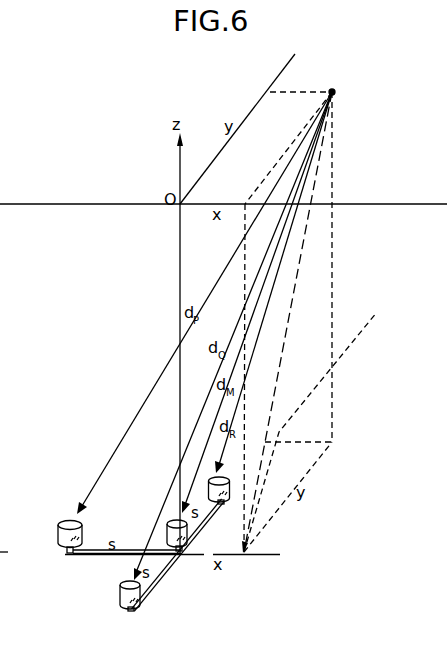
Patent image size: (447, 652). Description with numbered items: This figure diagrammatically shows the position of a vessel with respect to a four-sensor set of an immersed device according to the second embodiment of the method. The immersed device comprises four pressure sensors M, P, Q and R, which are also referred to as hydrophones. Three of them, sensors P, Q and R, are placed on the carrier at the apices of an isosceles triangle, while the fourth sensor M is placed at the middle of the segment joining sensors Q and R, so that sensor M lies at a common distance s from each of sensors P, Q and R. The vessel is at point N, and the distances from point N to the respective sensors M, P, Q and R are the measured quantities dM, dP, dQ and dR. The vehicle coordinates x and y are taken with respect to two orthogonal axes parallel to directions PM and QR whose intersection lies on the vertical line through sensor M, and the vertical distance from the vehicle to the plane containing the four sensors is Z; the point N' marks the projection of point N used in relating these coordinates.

The point N is at (339, 81).
The projection point N' is at (309, 441).
The pressure sensor P is at (60, 545).
The pressure sensor Q is at (130, 609).
The pressure sensor M is at (180, 551).
The pressure sensor R is at (221, 500).